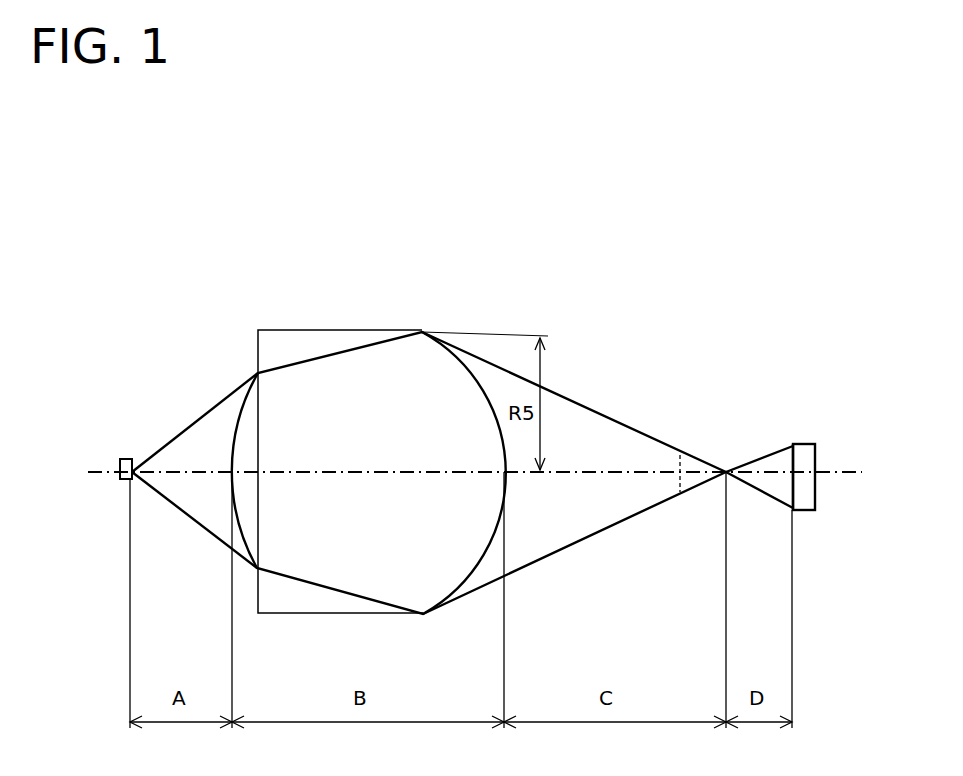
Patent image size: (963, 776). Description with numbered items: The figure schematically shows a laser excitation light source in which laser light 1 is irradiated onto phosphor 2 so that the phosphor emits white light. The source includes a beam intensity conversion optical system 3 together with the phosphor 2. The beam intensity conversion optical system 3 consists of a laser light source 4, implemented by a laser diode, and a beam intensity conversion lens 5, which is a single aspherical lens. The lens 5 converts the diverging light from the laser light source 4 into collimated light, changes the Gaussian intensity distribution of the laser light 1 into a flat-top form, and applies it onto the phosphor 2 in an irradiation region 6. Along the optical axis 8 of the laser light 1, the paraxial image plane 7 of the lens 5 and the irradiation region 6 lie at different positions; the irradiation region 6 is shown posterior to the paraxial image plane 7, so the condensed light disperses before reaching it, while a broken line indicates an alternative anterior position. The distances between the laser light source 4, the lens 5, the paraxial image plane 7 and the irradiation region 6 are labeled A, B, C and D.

The laser light 1 is at (618, 418).
The phosphor 2 is at (806, 443).
The beam intensity conversion optical system 3 is at (163, 240).
The laser light source 4 is at (126, 458).
The beam intensity conversion lens 5 is at (419, 398).
The irradiation region 6 is at (792, 446).
The paraxial image plane 7 is at (726, 472).
The optical axis 8 is at (329, 468).